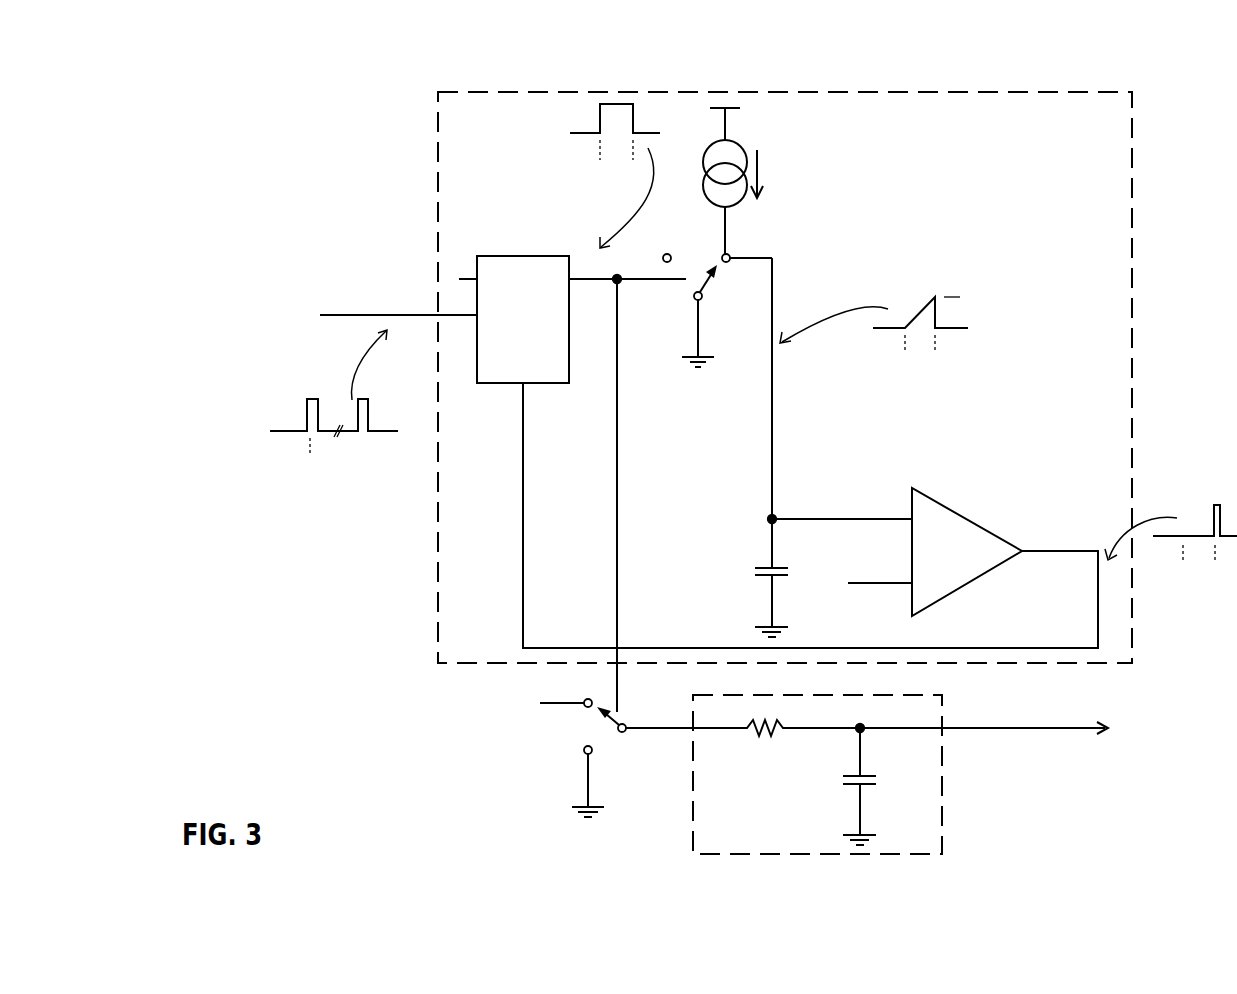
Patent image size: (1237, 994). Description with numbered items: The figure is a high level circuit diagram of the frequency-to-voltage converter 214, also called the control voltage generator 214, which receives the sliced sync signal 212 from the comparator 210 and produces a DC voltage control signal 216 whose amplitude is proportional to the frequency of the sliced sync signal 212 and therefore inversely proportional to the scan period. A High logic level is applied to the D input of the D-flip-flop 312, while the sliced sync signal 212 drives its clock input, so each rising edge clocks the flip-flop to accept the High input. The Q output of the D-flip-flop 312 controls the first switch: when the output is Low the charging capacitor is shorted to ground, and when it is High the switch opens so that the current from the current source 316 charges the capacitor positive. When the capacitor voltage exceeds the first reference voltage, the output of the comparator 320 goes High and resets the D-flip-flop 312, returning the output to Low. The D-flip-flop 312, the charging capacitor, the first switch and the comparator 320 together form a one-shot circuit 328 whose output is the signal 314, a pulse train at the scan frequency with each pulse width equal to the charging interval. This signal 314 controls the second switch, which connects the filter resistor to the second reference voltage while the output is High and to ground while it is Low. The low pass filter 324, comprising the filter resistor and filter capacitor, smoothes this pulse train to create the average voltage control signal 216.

The frequency-to-voltage converter 214 is at (517, 57).
The comparator (sliced sync signal source) 210 is at (232, 320).
The sliced sync signal 212 is at (355, 312).
The D-flip-flop 312 is at (527, 254).
The signal at Q output 314 is at (598, 284).
The current source 316 is at (742, 143).
The comparator 320 is at (958, 508).
The low pass filter 324 is at (942, 762).
The one-shot circuit 328 is at (1103, 92).
The voltage control signal 216 is at (1066, 729).